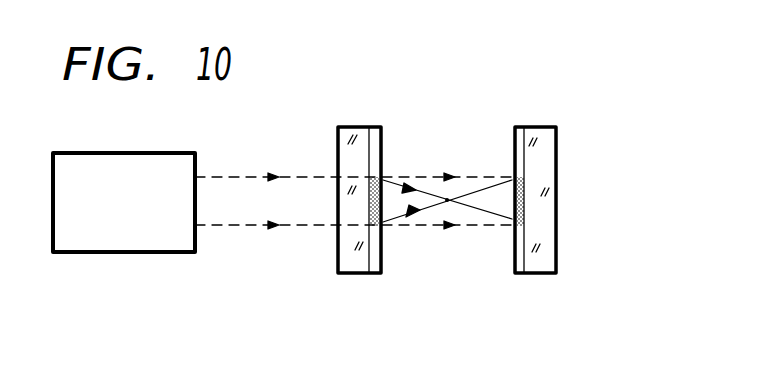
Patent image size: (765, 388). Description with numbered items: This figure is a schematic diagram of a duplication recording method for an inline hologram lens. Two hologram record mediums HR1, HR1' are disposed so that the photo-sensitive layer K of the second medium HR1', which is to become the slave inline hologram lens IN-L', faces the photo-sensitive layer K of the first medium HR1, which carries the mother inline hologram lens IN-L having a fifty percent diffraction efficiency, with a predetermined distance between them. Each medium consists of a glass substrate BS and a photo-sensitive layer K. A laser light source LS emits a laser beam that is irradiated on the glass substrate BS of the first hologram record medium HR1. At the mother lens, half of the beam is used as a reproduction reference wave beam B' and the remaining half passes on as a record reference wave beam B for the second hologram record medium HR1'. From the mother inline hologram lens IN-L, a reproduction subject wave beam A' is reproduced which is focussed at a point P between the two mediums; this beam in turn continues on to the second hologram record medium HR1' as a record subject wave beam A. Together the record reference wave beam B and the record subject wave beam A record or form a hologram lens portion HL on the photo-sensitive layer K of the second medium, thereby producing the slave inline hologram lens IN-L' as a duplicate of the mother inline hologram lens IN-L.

The laser light source LS is at (149, 253).
The reproduction reference wave beam B' is at (356, 175).
The record reference wave beam B is at (417, 152).
The record subject wave beam A is at (447, 173).
The reproduction subject wave beam A' is at (447, 230).
The point P is at (466, 209).
The mother inline hologram lens IN-L is at (333, 249).
The slave inline hologram lens IN-L' is at (574, 248).
The hologram record medium HR1 is at (373, 51).
The hologram record medium HR1' is at (538, 48).
The glass substrate BS is at (357, 127).
The photo-sensitive layer K is at (378, 127).
The hologram lens portion HL is at (380, 200).